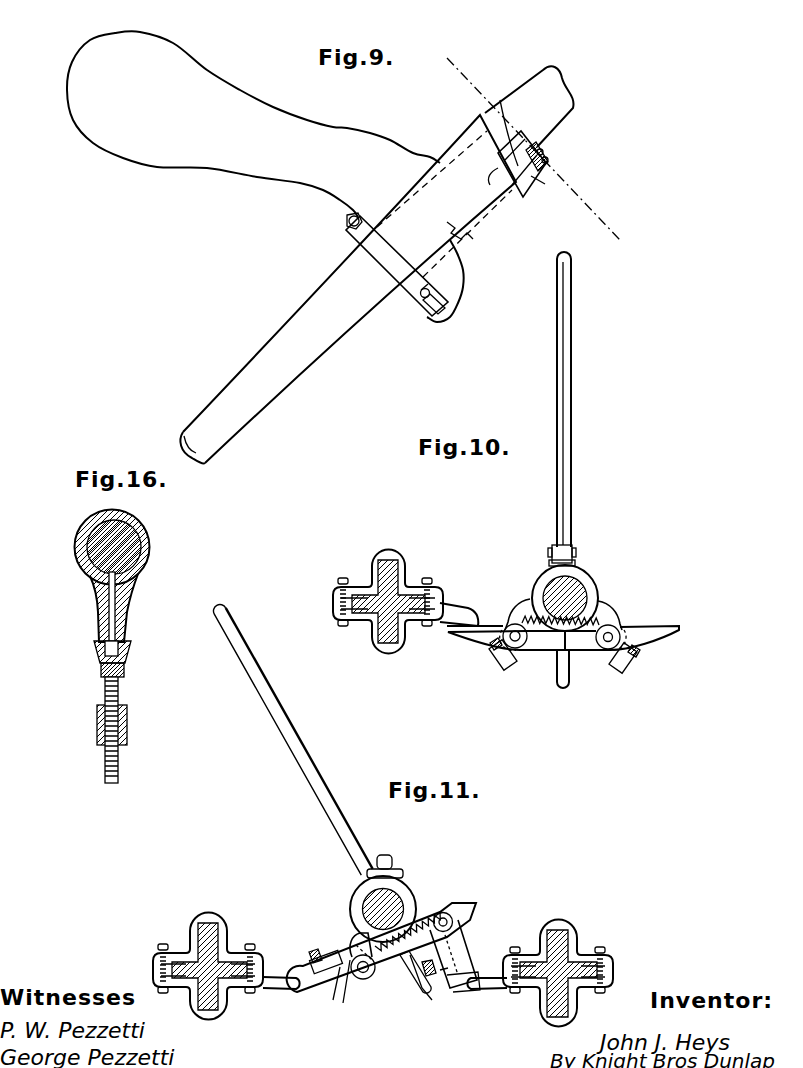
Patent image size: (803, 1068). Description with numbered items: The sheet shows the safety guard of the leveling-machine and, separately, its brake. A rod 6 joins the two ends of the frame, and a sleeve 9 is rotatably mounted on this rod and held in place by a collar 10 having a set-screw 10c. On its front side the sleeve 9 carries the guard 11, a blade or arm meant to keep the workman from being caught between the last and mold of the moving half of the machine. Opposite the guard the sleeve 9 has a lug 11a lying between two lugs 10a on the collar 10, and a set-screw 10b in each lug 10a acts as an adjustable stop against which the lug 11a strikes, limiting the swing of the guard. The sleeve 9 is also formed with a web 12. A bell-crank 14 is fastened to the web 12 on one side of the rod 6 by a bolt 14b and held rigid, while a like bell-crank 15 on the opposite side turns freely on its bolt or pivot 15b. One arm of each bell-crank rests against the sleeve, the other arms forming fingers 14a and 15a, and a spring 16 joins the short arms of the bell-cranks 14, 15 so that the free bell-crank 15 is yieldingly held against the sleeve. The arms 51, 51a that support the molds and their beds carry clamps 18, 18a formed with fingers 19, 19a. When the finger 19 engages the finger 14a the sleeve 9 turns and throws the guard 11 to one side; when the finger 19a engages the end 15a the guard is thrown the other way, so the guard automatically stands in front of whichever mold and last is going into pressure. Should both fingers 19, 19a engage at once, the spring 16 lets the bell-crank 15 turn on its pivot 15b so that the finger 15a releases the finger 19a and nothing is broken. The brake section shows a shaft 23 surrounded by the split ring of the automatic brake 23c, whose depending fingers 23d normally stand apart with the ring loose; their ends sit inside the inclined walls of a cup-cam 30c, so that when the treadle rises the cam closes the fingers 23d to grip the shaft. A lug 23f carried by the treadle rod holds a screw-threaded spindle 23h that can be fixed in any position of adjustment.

In FIG. 9, the rod 6 is at (563, 110).
In FIG. 10, the rod 6 is at (577, 598).
In FIG. 11, the rod 6 is at (398, 896).
In FIG. 9, the sleeve 9 is at (457, 137).
In FIG. 10, the sleeve 9 is at (583, 578).
In FIG. 11, the sleeve 9 is at (400, 884).
In FIG. 9, the collar 10 is at (333, 255).
In FIG. 9, the lugs 10a is at (415, 296).
In FIG. 10, the lugs 10a is at (640, 688).
In FIG. 11, the lugs 10a is at (327, 955).
In FIG. 9, the set-screw 10b is at (428, 300).
In FIG. 10, the set-screw 10b is at (610, 667).
In FIG. 11, the set-screw 10b is at (440, 1043).
In FIG. 9, the set-screw 10c is at (347, 225).
In FIG. 9, the guard 11 is at (305, 173).
In FIG. 10, the guard 11 is at (572, 358).
In FIG. 11, the guard 11 is at (300, 749).
In FIG. 9, the lug 11a is at (464, 297).
In FIG. 10, the lug 11a is at (560, 688).
In FIG. 11, the lug 11a is at (425, 993).
In FIG. 9, the web 12 is at (515, 182).
In FIG. 10, the web 12 is at (553, 650).
In FIG. 11, the web 12 is at (380, 985).
In FIG. 9, the bell-crank 14 is at (550, 175).
In FIG. 10, the bell-crank 14 is at (485, 640).
In FIG. 11, the bell-crank 14 is at (340, 990).
In FIG. 9, the finger 14a is at (499, 119).
In FIG. 10, the finger 14a is at (455, 640).
In FIG. 11, the finger 14a is at (309, 970).
In FIG. 9, the bolt 14b is at (545, 184).
In FIG. 10, the bolt 14b is at (515, 624).
In FIG. 10, the bell-crank 15 is at (630, 630).
In FIG. 11, the bell-crank 15 is at (467, 945).
In FIG. 10, the finger 15a is at (667, 623).
In FIG. 11, the finger 15a is at (470, 975).
In FIG. 10, the bolt 15b is at (614, 626).
In FIG. 9, the spring 16 is at (547, 160).
In FIG. 10, the spring 16 is at (578, 633).
In FIG. 11, the spring 16 is at (402, 968).
In FIG. 10, the clamp 18 is at (390, 653).
In FIG. 11, the clamp 18 is at (188, 1000).
In FIG. 11, the clamp 18a is at (580, 1012).
In FIG. 10, the finger 19 is at (467, 615).
In FIG. 11, the finger 19 is at (293, 992).
In FIG. 11, the finger 19a is at (477, 990).
In FIG. 16, the shaft 23 is at (128, 547).
In FIG. 16, the automatic brake 23c is at (76, 557).
In FIG. 16, the fingers 23d is at (130, 610).
In FIG. 16, the lug 23f is at (128, 720).
In FIG. 16, the screw-threaded spindle 23h is at (118, 763).
In FIG. 16, the cup-cam 30c is at (128, 654).
In FIG. 10, the arm 51 is at (398, 563).
In FIG. 11, the arm 51 is at (197, 930).
In FIG. 11, the arm 51a is at (567, 940).